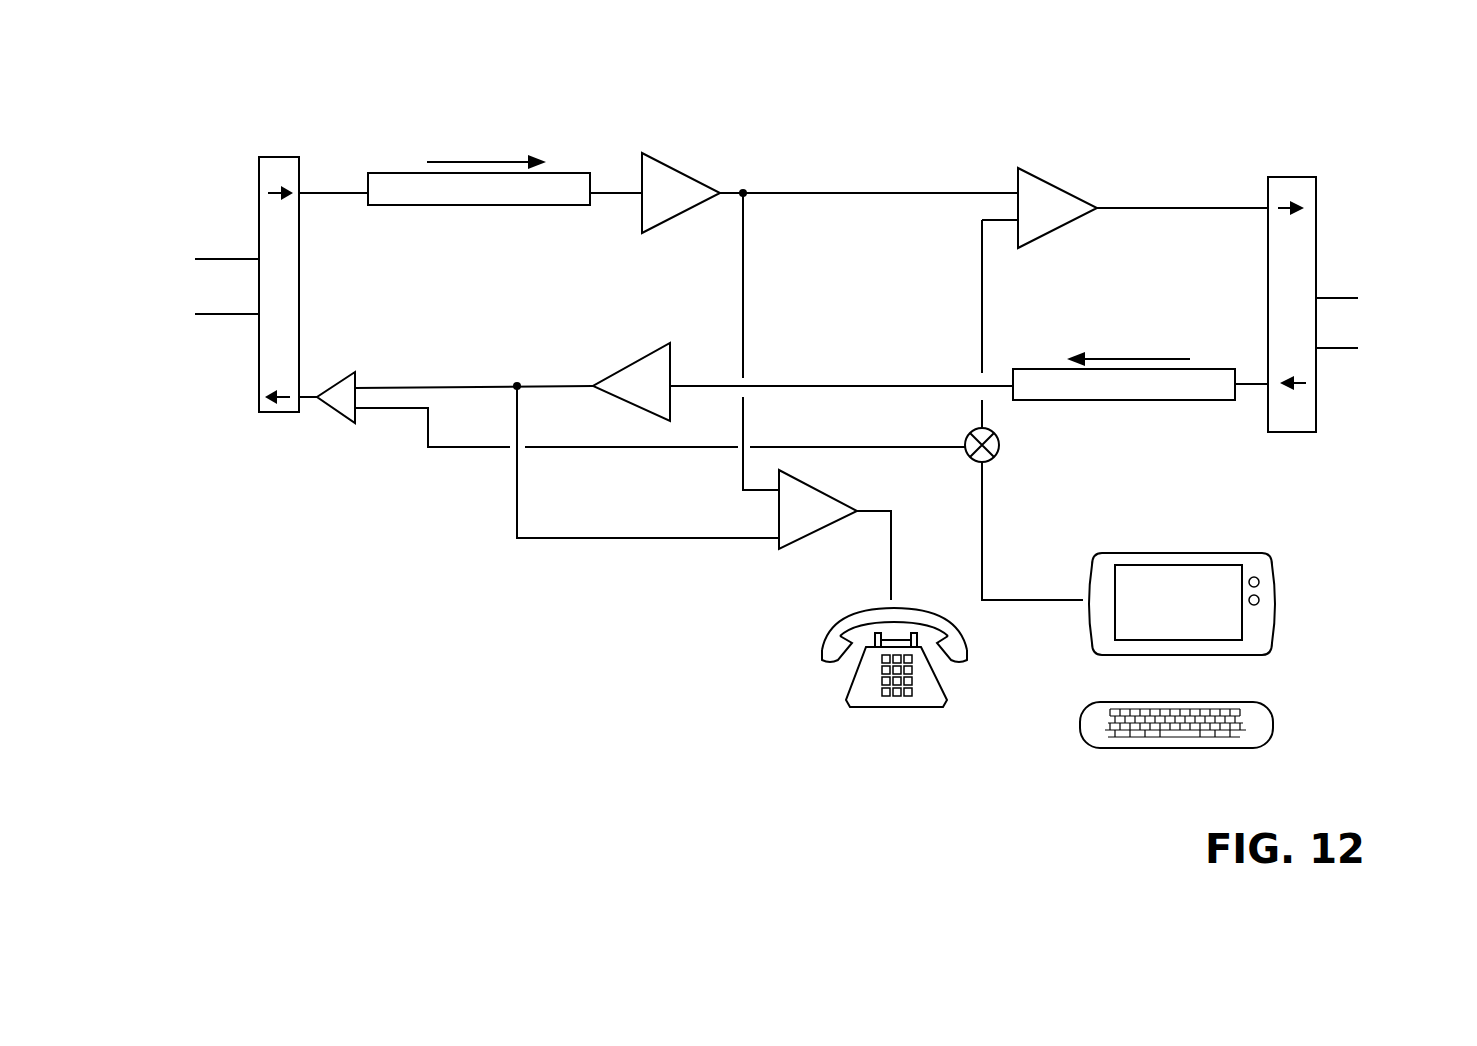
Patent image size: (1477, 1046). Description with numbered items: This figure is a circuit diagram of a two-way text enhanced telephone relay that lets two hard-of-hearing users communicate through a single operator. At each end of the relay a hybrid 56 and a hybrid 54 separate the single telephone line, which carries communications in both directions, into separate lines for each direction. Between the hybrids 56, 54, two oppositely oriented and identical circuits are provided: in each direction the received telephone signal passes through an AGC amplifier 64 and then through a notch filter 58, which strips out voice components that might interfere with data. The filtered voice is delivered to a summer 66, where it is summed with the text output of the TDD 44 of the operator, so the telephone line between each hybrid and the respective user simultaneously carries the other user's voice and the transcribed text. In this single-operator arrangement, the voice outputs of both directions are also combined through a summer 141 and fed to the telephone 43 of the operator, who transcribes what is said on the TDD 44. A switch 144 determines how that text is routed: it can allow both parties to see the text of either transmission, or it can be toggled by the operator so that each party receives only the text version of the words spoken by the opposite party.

The hybrid 56 is at (289, 171).
The hybrid 54 is at (1308, 192).
The notch filter 58 is at (567, 171).
The AGC amplifier 64 is at (660, 177).
The summer 66 is at (1035, 190).
The summer 141 is at (829, 509).
The switch 144 is at (998, 448).
The telephone 43 is at (835, 637).
The TDD 44 is at (1268, 640).